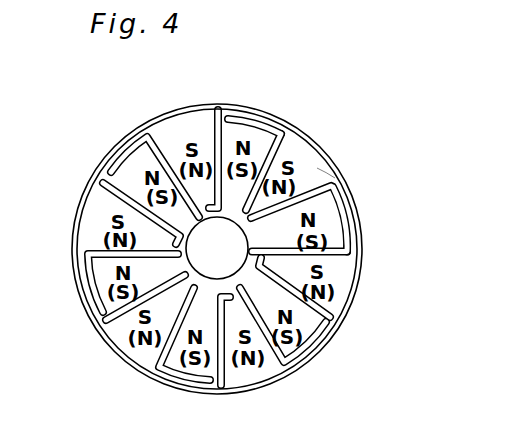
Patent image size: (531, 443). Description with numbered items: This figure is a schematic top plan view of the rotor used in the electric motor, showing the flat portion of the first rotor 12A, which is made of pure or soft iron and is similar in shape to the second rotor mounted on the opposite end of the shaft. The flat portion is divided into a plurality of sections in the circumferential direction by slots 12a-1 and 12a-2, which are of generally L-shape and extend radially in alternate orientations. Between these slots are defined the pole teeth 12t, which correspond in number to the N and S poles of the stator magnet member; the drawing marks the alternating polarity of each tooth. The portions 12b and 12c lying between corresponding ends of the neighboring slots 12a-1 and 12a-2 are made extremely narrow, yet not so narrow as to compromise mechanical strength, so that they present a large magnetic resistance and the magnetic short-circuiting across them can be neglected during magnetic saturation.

The first rotor 12A is at (83, 197).
The slot 12a-1 is at (282, 127).
The slot 12a-2 is at (217, 117).
The portion between slot ends 12b is at (327, 190).
The portion between slot ends 12c is at (228, 117).
The pole tooth 12t is at (317, 168).